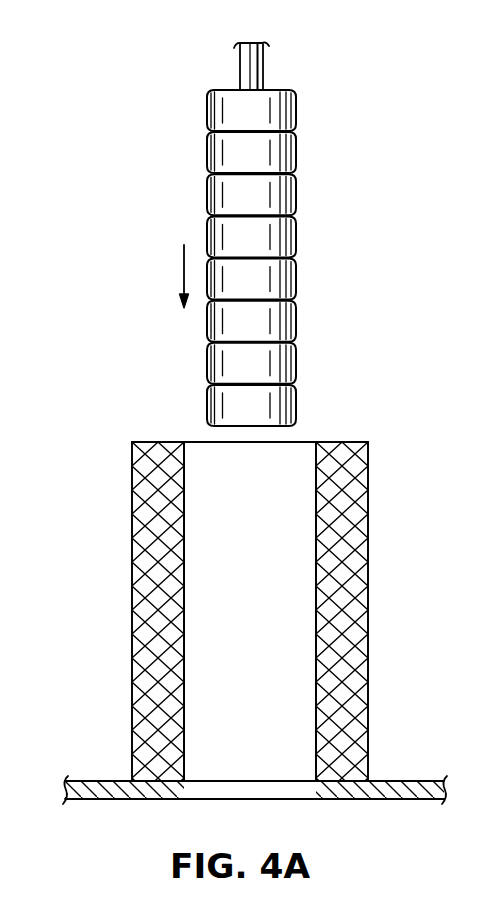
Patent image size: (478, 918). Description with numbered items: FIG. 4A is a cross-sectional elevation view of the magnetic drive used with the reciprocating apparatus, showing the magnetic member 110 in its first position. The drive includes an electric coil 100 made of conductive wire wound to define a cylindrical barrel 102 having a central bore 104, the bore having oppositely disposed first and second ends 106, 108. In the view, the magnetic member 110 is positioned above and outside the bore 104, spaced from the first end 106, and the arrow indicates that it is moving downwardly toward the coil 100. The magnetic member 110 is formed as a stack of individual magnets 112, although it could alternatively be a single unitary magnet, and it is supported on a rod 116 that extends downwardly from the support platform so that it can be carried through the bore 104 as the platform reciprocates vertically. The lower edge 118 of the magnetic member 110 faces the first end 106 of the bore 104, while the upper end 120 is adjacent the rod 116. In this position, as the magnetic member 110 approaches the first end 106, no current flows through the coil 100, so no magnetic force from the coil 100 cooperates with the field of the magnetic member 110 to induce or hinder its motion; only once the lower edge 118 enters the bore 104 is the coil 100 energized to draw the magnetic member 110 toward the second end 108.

The electric coil 100 is at (395, 515).
The cylindrical barrel 102 is at (359, 593).
The central bore 104 is at (186, 614).
The first end 106 is at (161, 442).
The second end 108 is at (341, 800).
The magnetic member 110 is at (305, 253).
The individual magnets 112 is at (205, 232).
The rod 116 is at (239, 59).
The lower edge 118 is at (244, 427).
The upper end 120 is at (280, 90).